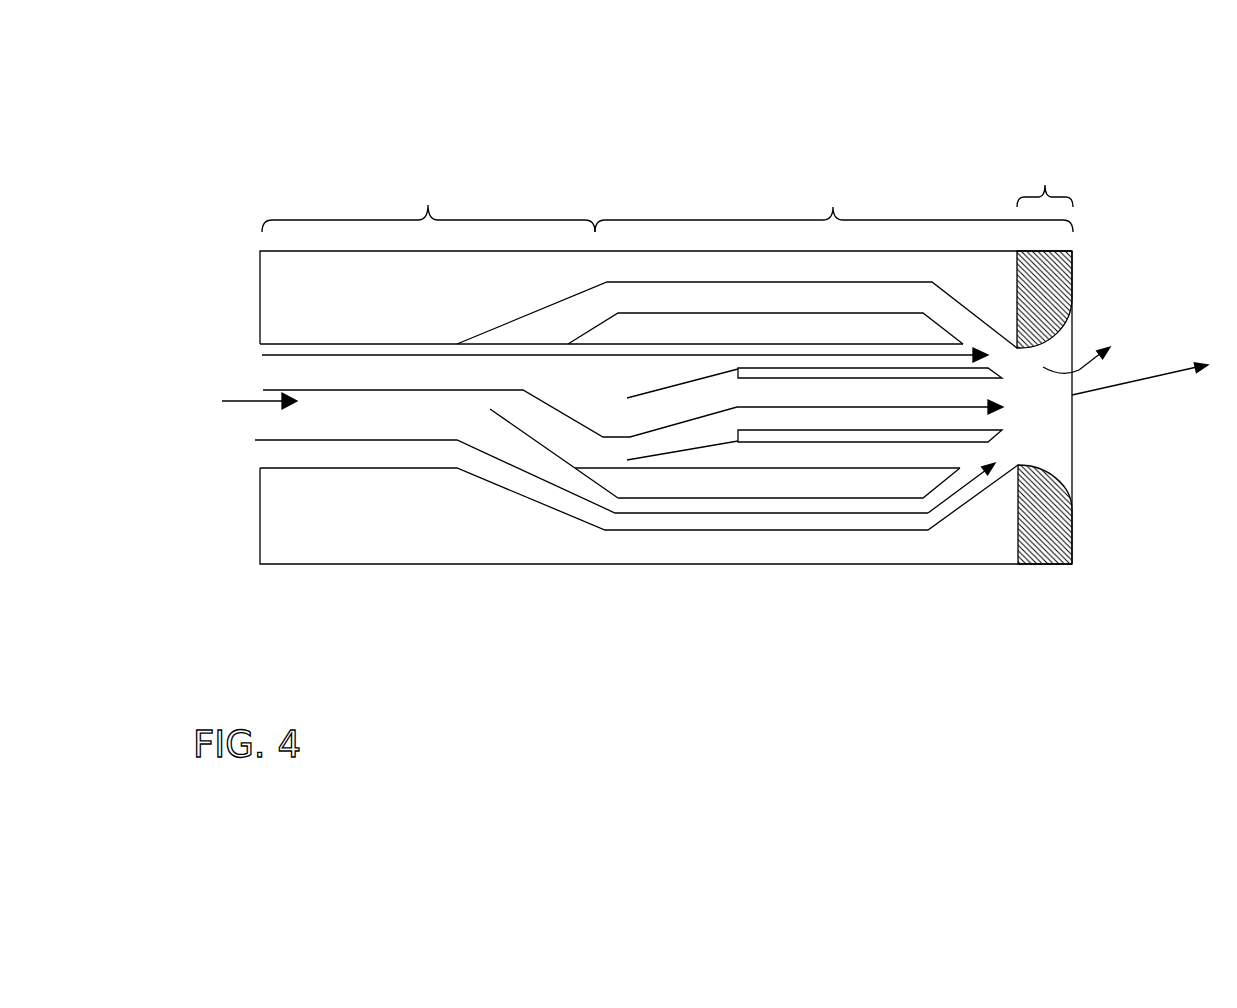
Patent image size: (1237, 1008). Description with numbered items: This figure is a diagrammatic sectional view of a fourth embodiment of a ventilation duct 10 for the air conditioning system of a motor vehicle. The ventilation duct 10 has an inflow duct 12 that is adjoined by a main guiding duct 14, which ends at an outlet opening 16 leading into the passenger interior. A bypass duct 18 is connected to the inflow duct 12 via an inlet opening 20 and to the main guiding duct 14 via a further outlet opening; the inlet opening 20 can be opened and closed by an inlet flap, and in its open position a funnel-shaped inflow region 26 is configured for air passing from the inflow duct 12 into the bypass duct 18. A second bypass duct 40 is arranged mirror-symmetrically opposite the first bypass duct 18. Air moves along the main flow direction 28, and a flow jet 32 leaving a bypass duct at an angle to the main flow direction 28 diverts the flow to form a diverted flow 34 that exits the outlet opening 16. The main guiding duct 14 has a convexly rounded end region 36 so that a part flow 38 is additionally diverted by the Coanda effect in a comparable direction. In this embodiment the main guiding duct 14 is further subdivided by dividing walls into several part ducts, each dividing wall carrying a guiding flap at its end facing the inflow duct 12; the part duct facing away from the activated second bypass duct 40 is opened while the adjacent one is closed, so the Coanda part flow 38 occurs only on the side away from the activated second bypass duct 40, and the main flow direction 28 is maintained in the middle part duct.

The ventilation duct 10 is at (277, 185).
The inflow duct 12 is at (428, 201).
The main guiding duct 14 is at (834, 203).
The outlet opening 16 is at (1072, 475).
The bypass duct 18 is at (686, 296).
The inlet opening 20 is at (476, 466).
The funnel-shaped inflow region 26 is at (523, 449).
The main flow direction 28 is at (252, 401).
The flow jet 32 is at (941, 503).
The diverted flow 34 is at (1147, 377).
The convexly rounded end region 36 is at (1045, 249).
The part flow 38 is at (1079, 370).
The second bypass duct 40 is at (680, 522).